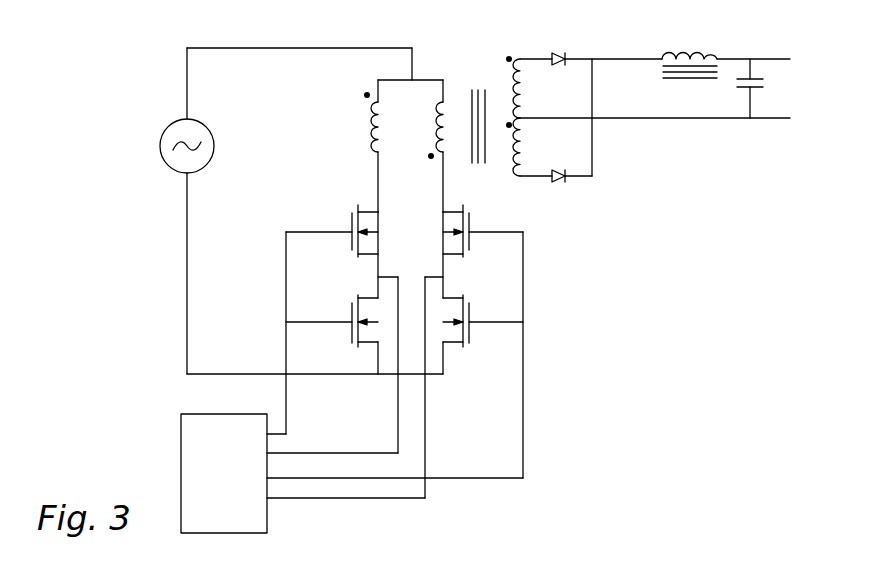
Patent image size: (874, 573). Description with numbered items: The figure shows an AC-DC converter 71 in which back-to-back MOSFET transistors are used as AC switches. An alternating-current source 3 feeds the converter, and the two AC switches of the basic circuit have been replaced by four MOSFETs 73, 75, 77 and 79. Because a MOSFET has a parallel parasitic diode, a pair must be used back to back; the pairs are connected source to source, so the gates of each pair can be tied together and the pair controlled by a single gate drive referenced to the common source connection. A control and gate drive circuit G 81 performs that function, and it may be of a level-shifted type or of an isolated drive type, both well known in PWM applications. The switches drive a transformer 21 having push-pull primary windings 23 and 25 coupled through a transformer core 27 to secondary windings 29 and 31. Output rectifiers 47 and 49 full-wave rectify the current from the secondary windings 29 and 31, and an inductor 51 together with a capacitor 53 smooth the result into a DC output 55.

The AC power source 3 is at (158, 138).
The transformer 21 is at (454, 60).
The push pull primary winding 23 is at (368, 128).
The push pull primary winding 25 is at (427, 133).
The transformer core 27 is at (463, 92).
The secondary winding 29 is at (515, 82).
The secondary winding 31 is at (511, 163).
The output rectifier 47 is at (555, 183).
The output rectifier 49 is at (552, 48).
The inductor 51 is at (670, 50).
The capacitor 53 is at (735, 95).
The output 55 is at (826, 70).
The AC-DC converter 71 is at (167, 48).
The MOSFET 73 is at (365, 203).
The MOSFET 75 is at (365, 352).
The MOSFET 77 is at (453, 260).
The MOSFET 79 is at (453, 353).
The control and gate drive circuit G 81 is at (163, 452).